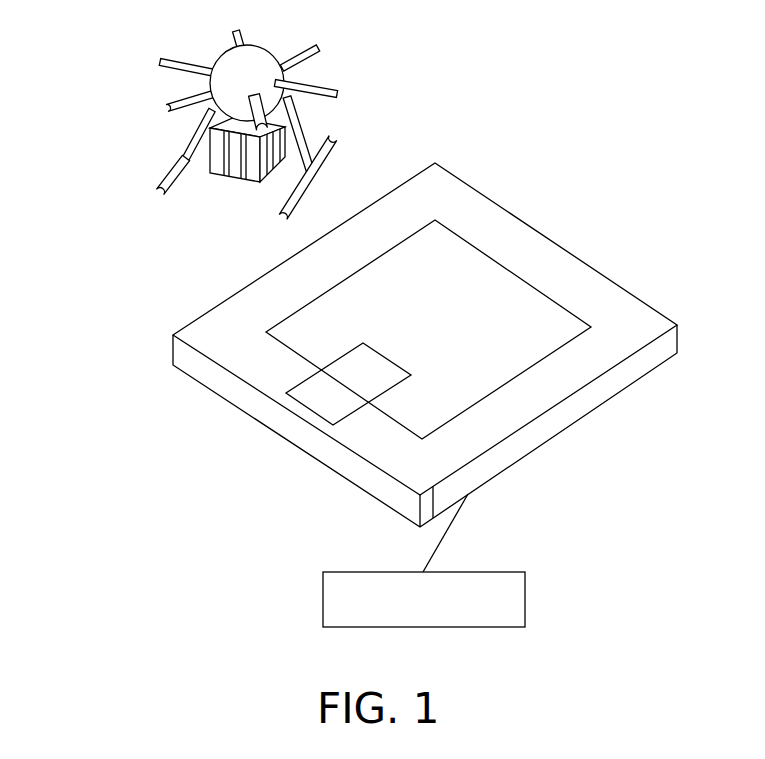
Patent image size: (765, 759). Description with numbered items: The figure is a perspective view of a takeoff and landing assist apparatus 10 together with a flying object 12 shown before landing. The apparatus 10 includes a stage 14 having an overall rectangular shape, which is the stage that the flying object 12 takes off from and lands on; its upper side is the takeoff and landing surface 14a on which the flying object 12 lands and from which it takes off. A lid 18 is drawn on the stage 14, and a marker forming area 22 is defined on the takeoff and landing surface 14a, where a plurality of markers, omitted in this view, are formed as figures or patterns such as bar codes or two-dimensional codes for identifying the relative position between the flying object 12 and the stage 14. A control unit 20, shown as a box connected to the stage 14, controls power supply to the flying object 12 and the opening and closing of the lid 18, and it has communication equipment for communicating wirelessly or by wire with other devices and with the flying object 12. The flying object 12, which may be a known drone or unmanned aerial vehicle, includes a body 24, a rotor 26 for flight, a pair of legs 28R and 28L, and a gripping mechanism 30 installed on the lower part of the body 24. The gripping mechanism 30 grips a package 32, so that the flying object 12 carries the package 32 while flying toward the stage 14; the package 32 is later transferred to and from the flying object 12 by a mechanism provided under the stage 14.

The takeoff and landing assist apparatus 10 is at (470, 160).
The flying object 12 is at (325, 75).
The stage 14 is at (543, 233).
The takeoff and landing surface 14a is at (607, 323).
The lid 18 is at (385, 392).
The control unit 20 is at (525, 593).
The marker forming area 22 is at (525, 377).
The body 24 is at (221, 60).
The rotor 26 is at (158, 61).
The left leg 28L is at (173, 143).
The right leg 28R is at (307, 122).
The gripping mechanism 30 is at (222, 177).
The package 32 is at (233, 180).